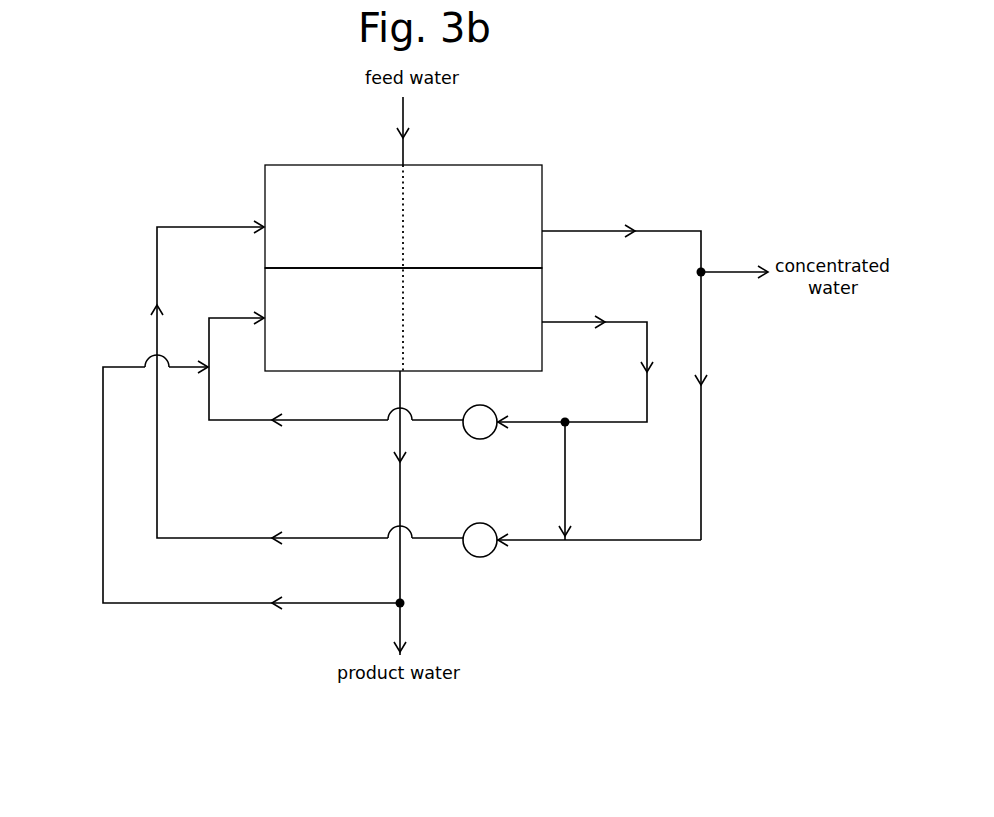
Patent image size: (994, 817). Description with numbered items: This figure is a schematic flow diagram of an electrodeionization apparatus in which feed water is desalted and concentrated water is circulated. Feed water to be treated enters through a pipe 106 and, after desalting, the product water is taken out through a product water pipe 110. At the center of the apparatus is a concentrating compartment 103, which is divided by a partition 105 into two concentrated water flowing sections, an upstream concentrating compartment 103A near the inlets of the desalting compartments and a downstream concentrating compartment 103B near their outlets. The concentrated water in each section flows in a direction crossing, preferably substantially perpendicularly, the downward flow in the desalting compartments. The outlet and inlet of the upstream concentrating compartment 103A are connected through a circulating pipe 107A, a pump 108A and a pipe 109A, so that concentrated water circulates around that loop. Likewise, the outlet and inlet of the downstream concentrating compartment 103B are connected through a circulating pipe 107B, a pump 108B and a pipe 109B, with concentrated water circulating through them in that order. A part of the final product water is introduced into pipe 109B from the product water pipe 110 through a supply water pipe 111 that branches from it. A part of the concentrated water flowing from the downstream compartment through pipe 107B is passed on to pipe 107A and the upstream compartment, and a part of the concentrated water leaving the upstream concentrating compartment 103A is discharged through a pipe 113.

The concentrating compartment 103 is at (443, 252).
The upstream concentrating compartment 103A is at (417, 199).
The downstream concentrating compartment 103B is at (443, 333).
The partition 105 is at (310, 268).
The pipe 106 is at (404, 106).
The circulating pipe 107A is at (683, 231).
The circulating pipe 107B is at (640, 322).
The pump 108A is at (479, 557).
The pump 108B is at (479, 439).
The pipe 109A is at (193, 227).
The pipe 109B is at (217, 318).
The product water pipe 110 is at (401, 576).
The supply water pipe 111 is at (103, 550).
The pipe 113 is at (743, 272).